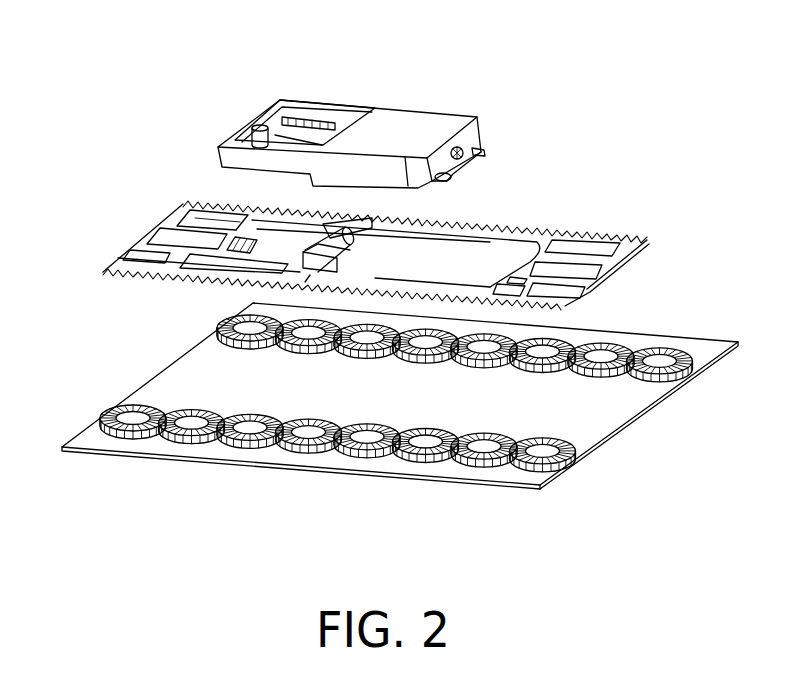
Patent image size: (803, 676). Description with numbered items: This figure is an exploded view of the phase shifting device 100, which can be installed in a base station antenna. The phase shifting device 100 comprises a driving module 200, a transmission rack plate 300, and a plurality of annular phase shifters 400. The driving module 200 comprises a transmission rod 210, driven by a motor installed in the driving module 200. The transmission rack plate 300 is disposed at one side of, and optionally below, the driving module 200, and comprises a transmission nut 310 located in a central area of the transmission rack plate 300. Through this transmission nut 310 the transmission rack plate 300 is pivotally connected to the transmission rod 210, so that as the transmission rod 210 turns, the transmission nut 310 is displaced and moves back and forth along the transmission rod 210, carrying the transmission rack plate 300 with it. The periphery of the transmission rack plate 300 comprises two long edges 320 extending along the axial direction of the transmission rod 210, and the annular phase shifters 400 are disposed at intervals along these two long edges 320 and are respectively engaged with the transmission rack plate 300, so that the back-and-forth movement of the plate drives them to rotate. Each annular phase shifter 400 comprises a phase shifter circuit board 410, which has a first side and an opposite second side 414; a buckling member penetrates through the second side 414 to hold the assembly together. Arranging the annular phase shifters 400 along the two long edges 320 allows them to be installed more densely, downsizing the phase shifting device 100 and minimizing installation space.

The phase shifting device 100 is at (88, 88).
The driving module 200 is at (427, 130).
The transmission rod 210 is at (268, 122).
The transmission rack plate 300 is at (182, 228).
The transmission nut 310 is at (360, 226).
The long edges 320 is at (555, 238).
The annular phase shifters 400 is at (127, 405).
The phase shifter circuit board 410 is at (630, 398).
The second side 414 is at (362, 475).